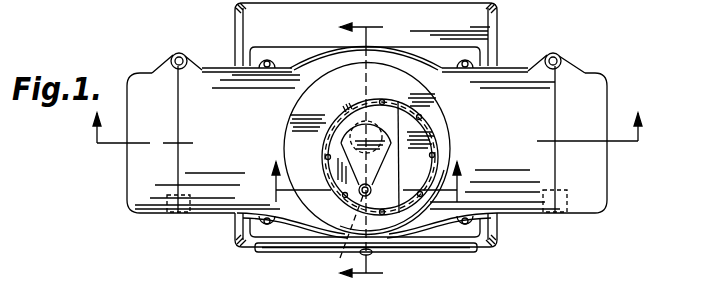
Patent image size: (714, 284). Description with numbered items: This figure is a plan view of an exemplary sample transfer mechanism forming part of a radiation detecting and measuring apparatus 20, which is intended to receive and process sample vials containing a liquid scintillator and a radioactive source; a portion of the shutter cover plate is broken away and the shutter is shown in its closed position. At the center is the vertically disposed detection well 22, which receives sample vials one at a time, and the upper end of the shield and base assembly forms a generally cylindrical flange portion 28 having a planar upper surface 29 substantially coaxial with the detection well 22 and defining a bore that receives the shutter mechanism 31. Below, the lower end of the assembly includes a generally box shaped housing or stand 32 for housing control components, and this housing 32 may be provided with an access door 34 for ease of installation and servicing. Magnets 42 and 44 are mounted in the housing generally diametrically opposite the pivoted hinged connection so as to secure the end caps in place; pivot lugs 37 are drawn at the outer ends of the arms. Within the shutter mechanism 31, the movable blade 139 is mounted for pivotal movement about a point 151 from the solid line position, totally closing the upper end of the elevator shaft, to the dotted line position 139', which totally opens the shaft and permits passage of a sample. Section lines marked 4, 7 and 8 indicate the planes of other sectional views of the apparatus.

The radiation detecting and measuring apparatus 20 is at (505, 248).
The detection well 22 is at (351, 104).
The cylindrical flange portion 28 is at (476, 277).
The planar upper surface 29 is at (306, 279).
The shutter mechanism 31 is at (387, 117).
The housing or stand 32 is at (245, 255).
The access door 34 is at (426, 251).
The pivot lugs 37 is at (181, 53).
The magnet 42 is at (183, 214).
The magnet 44 is at (546, 208).
The movable blade 139 is at (367, 149).
The dotted line position of movable blade 139' is at (458, 140).
The pivot point 151 is at (339, 252).
The section line 4- 4 is at (363, 150).
The section line 7- 7 is at (372, 147).
The section line 8- 8 is at (366, 188).